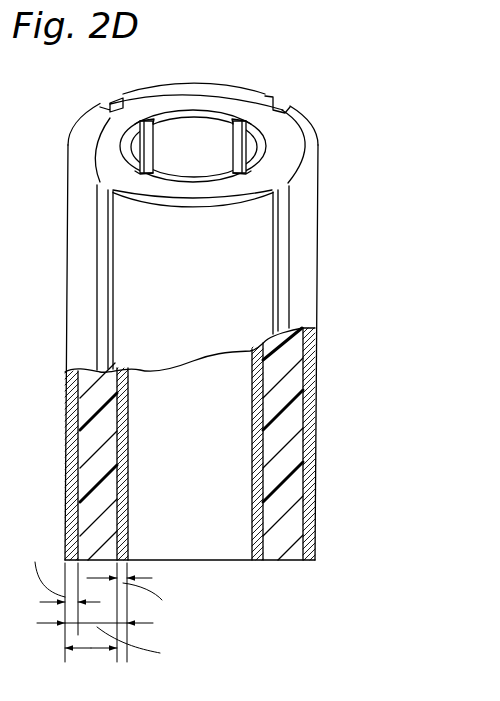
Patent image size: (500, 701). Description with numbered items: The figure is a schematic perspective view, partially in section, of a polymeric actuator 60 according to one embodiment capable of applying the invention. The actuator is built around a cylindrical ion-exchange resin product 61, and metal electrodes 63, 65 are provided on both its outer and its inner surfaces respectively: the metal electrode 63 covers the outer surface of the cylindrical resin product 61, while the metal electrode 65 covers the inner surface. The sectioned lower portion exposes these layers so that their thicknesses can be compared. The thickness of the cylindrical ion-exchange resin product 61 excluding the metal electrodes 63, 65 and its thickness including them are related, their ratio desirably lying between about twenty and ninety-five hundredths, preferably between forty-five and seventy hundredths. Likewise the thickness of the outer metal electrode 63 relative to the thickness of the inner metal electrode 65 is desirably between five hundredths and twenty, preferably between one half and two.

The polymeric actuator 60 is at (329, 194).
The cylindrical ion-exchange resin product 61 is at (102, 157).
The metal electrode 63 is at (182, 83).
The metal electrode 65 is at (127, 133).